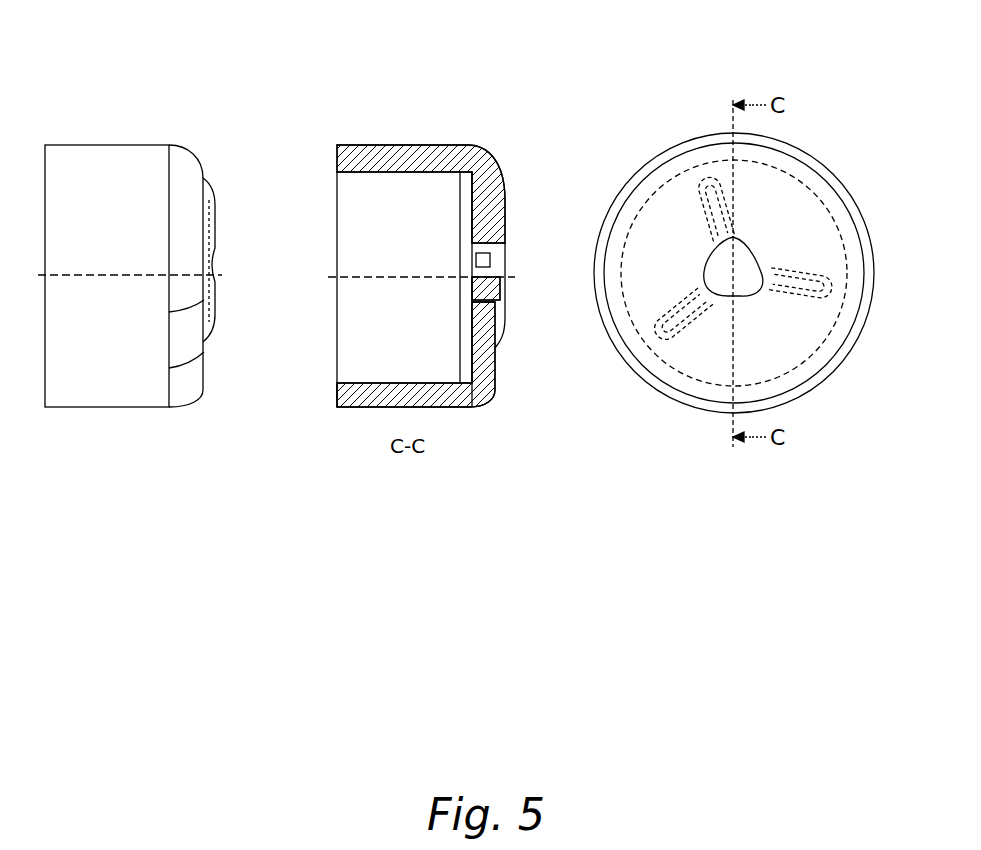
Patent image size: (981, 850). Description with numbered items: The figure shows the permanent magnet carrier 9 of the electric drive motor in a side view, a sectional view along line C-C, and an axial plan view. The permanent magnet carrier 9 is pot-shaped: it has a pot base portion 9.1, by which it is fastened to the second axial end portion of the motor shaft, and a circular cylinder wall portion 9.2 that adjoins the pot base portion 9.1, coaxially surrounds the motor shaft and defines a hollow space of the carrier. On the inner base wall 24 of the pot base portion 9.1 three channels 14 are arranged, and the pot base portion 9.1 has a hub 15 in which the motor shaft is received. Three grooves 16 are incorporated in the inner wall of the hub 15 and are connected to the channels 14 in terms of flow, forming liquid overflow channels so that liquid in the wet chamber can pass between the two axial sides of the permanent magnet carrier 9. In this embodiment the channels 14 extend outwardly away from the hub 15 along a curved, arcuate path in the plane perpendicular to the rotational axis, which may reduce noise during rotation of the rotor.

The permanent magnet carrier 9 is at (125, 165).
The pot base portion 9.1 is at (500, 178).
The circular cylinder wall portion 9.2 is at (408, 160).
The channels 14 is at (722, 202).
The hub 15 is at (488, 265).
The grooves 16 is at (712, 282).
The inner base wall 24 is at (457, 345).